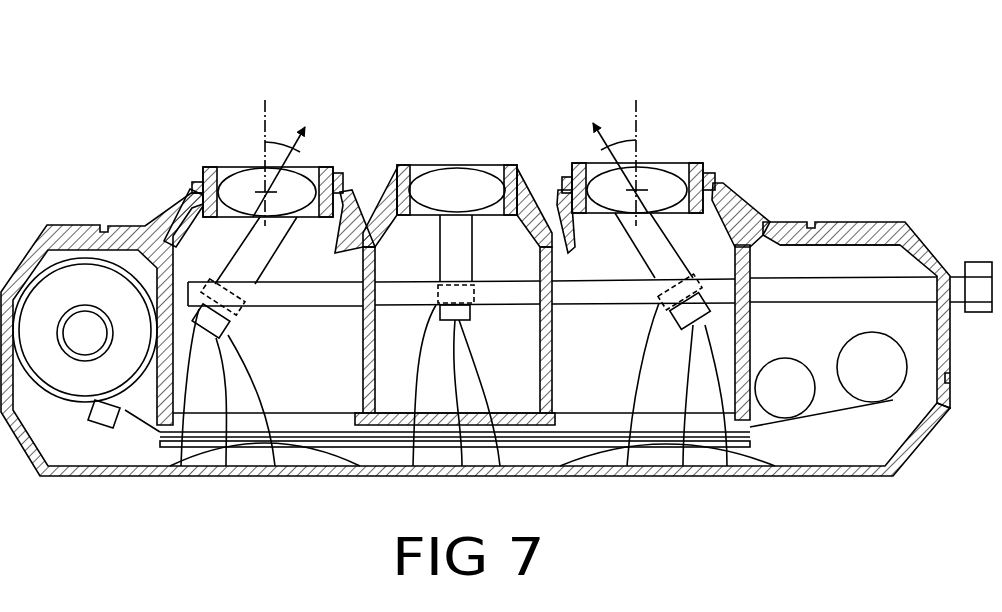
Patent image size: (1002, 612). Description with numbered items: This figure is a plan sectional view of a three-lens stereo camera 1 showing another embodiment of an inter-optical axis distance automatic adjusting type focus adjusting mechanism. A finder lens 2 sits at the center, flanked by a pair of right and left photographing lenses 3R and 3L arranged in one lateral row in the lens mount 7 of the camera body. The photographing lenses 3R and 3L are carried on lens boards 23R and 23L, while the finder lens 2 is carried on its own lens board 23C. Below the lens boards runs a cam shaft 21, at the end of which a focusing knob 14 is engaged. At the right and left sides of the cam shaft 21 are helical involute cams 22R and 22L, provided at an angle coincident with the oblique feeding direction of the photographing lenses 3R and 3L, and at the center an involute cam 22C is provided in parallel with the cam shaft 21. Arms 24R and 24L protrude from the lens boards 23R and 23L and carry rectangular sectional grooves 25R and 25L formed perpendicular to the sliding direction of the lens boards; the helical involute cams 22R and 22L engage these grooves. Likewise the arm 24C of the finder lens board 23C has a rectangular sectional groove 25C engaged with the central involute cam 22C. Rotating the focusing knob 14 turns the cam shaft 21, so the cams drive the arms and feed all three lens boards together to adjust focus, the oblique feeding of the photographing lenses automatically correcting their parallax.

The three-lens stereo camera 1 is at (150, 77).
The finder lens 2 is at (457, 197).
The left photographing lens 3L is at (267, 192).
The right photographing lens 3R is at (638, 189).
The lens mount 7 is at (475, 325).
The focusing knob 14 is at (971, 257).
The cam shaft 21 is at (840, 232).
The left helical involute cam 22L is at (200, 401).
The central involute cam 22C is at (434, 404).
The right helical involute cam 22R is at (650, 399).
The left lens board 23L is at (368, 274).
The finder lens board 23C is at (523, 274).
The right lens board 23R is at (746, 282).
The left arm 24L is at (220, 414).
The central arm 24C is at (462, 414).
The right arm 24R is at (684, 408).
The left rectangular sectional groove 25L is at (269, 429).
The central rectangular sectional groove 25C is at (498, 422).
The right rectangular sectional groove 25R is at (728, 424).